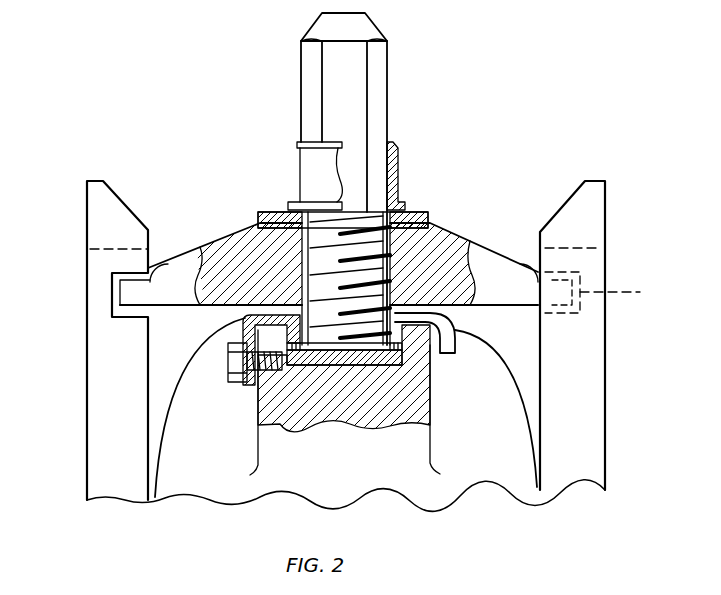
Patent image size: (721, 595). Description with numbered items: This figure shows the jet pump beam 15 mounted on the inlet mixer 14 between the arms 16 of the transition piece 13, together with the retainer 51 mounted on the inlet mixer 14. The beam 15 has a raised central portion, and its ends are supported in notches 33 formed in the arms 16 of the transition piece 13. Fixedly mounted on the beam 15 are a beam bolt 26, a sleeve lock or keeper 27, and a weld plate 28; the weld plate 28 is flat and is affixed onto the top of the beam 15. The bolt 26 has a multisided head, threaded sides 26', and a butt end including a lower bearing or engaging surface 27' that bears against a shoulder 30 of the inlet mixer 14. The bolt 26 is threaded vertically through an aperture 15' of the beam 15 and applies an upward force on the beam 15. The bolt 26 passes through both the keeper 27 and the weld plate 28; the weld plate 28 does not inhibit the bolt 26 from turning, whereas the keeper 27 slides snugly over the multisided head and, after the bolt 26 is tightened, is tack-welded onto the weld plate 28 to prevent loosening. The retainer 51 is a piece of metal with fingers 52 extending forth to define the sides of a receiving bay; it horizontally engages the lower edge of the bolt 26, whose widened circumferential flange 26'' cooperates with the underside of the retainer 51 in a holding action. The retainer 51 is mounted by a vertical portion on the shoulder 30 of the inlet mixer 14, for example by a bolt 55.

The transition piece 13 is at (612, 453).
The inlet mixer 14 is at (362, 468).
The jet pump beam 15 is at (211, 238).
The aperture 15' is at (464, 251).
The arms 16 is at (87, 428).
The beam bolt 26 is at (371, 179).
The threaded sides 26' is at (292, 268).
The circumferential flange 26'' is at (385, 372).
The sleeve lock or keeper 27 is at (294, 163).
The lower bearing surface 27' is at (383, 386).
The weld plate 28 is at (278, 212).
The shoulder 30 is at (262, 415).
The notches 33 is at (112, 315).
The retainer 51 is at (243, 326).
The fingers 52 is at (456, 325).
The bolt 55 is at (238, 368).